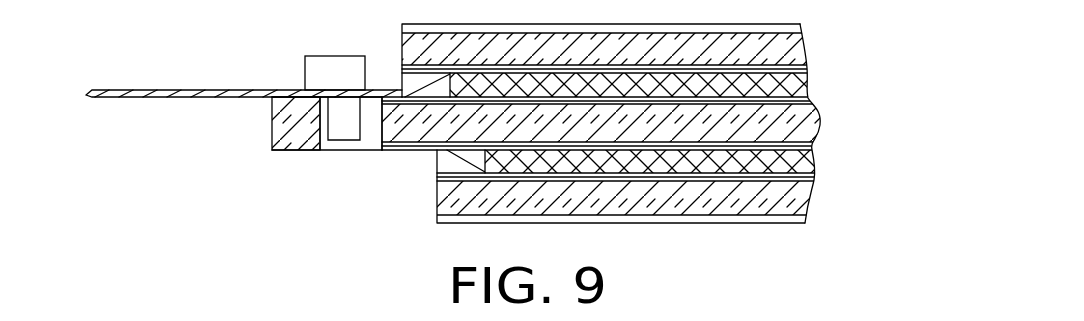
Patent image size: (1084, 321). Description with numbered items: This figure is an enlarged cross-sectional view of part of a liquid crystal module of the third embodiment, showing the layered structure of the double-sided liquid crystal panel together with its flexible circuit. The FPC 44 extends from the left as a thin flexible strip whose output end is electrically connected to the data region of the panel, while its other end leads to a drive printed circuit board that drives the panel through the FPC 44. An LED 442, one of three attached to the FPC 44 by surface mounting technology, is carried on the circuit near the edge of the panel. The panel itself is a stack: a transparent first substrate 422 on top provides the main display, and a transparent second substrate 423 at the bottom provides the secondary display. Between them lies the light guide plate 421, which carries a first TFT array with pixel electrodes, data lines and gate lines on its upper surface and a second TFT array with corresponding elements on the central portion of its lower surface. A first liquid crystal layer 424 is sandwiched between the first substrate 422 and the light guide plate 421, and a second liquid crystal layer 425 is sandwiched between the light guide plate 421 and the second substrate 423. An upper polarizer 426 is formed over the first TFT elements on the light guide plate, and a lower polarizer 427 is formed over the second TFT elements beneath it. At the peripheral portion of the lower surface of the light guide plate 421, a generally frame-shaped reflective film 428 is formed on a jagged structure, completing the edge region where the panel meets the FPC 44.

The FPC 44 is at (233, 90).
The LED 442 is at (343, 127).
The light guide plate 421 is at (395, 118).
The first substrate 422 is at (788, 38).
The second substrate 423 is at (775, 195).
The first liquid crystal layer 424 is at (792, 88).
The second liquid crystal layer 425 is at (803, 158).
The upper polarizer 426 is at (780, 105).
The lower polarizer 427 is at (812, 136).
The reflective film 428 is at (386, 158).